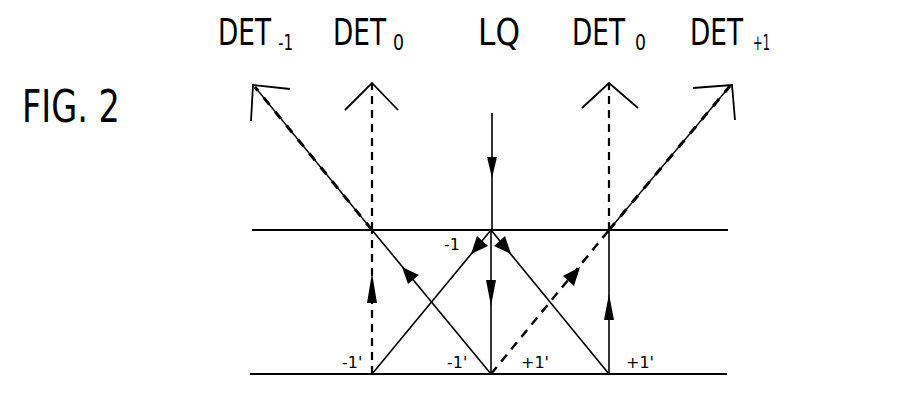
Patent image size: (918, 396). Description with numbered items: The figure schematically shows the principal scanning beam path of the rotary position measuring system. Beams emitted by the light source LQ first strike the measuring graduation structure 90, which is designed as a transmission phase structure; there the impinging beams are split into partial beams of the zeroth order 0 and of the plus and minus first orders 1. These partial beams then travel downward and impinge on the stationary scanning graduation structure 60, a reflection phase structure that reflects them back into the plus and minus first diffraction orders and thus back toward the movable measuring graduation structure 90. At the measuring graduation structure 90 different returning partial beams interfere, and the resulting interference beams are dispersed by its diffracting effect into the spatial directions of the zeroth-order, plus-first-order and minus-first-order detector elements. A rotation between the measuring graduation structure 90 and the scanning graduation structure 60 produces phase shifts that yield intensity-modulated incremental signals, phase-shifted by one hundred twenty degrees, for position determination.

The measuring graduation structure 90 is at (712, 230).
The scanning graduation structure 60 is at (707, 373).
The partial beam of zeroth order 0 is at (498, 302).
The partial beam of first order 1 is at (550, 302).